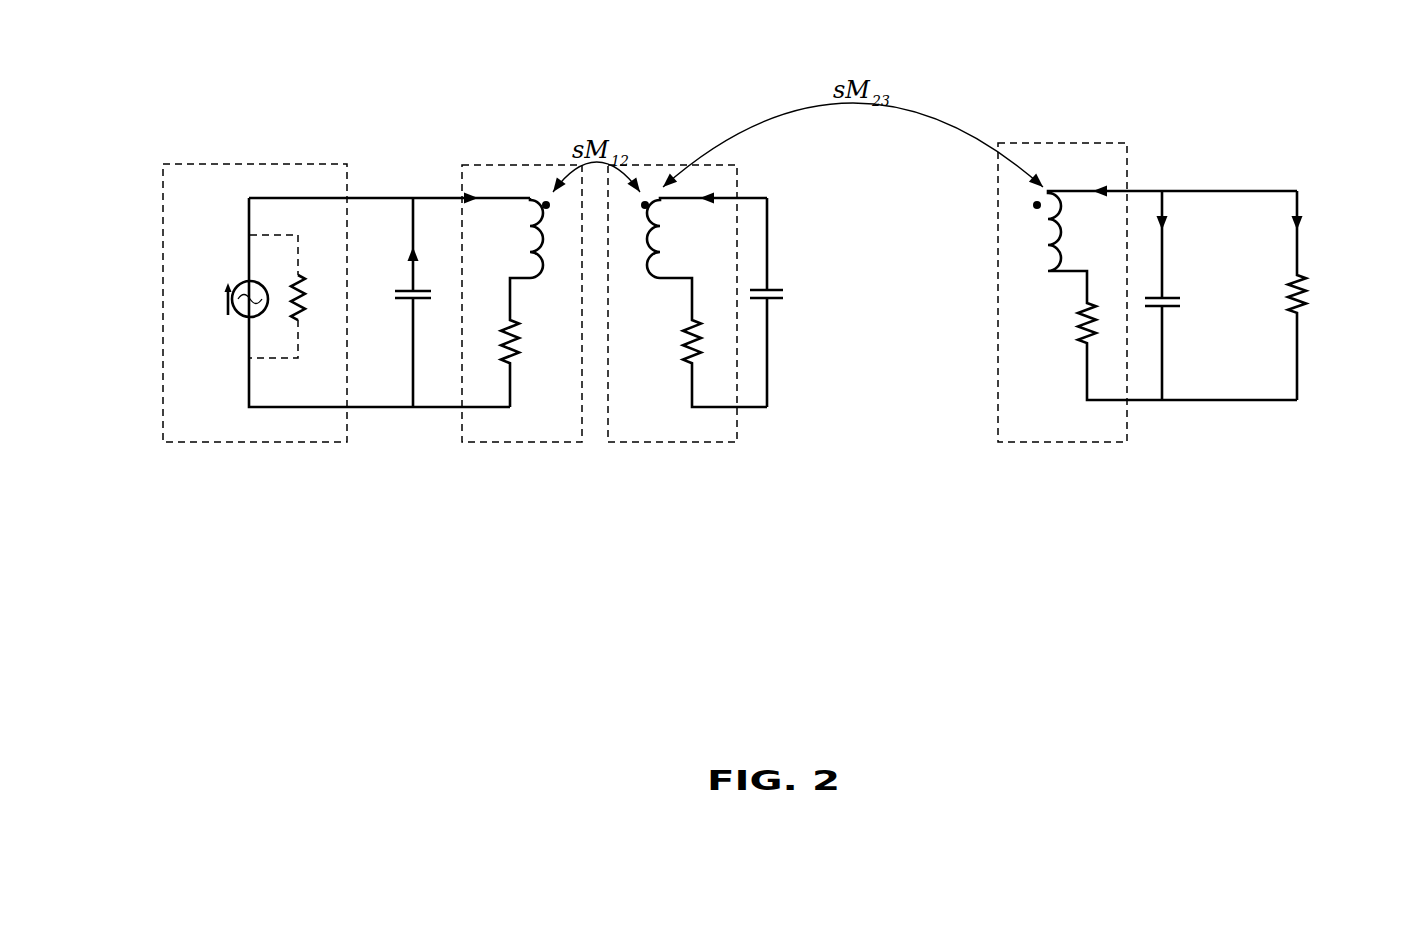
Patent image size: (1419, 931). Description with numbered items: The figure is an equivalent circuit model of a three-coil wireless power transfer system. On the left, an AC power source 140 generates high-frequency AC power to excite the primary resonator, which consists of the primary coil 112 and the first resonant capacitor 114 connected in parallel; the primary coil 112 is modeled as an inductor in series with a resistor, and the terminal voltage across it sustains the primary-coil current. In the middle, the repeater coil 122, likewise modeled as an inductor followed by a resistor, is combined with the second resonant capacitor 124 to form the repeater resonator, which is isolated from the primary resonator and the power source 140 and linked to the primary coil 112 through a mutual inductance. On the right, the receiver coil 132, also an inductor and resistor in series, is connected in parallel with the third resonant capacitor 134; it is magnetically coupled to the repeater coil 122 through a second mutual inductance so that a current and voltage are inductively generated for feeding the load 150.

The primary coil 112 is at (478, 165).
The first resonant capacitor 114 is at (403, 290).
The repeater coil 122 is at (657, 165).
The second resonant capacitor 124 is at (773, 288).
The receiver coil 132 is at (1082, 142).
The third resonant capacitor 134 is at (1170, 300).
The AC power source 140 is at (195, 443).
The load 150 is at (1303, 313).